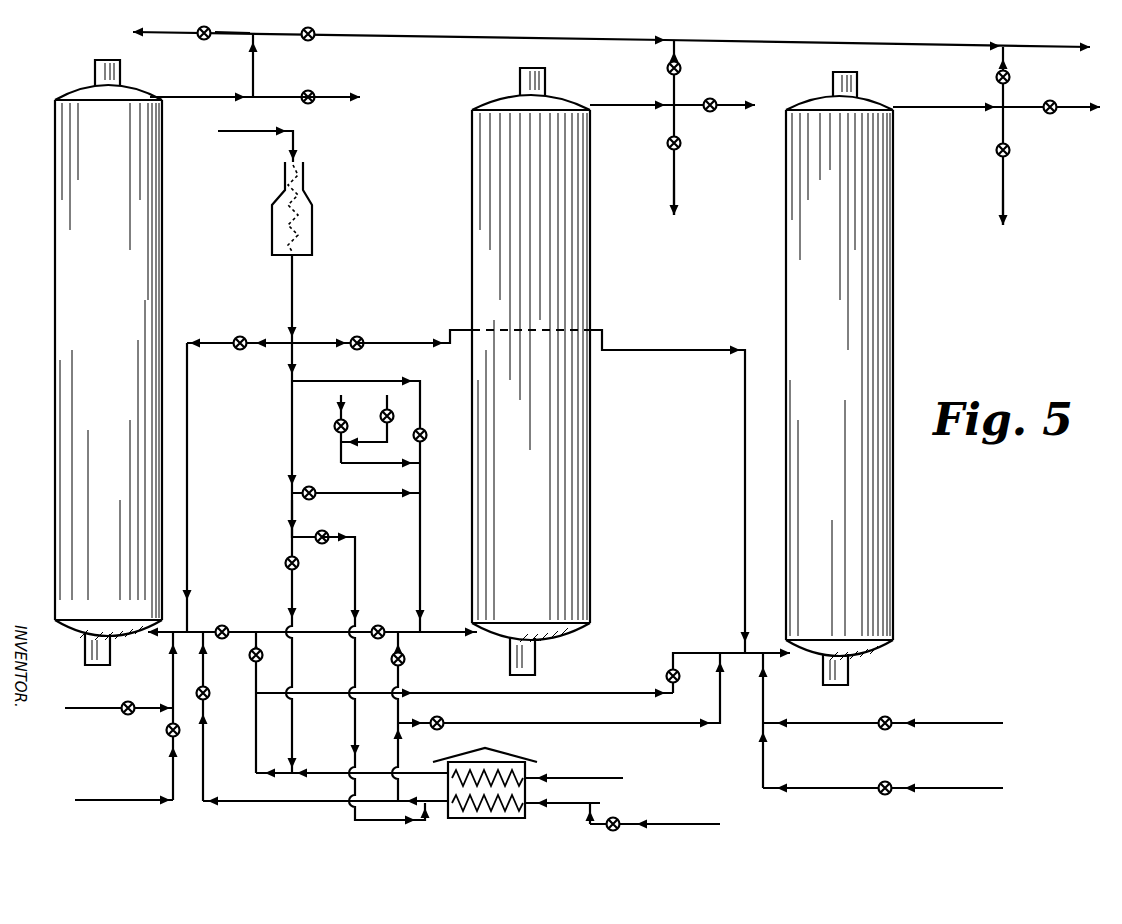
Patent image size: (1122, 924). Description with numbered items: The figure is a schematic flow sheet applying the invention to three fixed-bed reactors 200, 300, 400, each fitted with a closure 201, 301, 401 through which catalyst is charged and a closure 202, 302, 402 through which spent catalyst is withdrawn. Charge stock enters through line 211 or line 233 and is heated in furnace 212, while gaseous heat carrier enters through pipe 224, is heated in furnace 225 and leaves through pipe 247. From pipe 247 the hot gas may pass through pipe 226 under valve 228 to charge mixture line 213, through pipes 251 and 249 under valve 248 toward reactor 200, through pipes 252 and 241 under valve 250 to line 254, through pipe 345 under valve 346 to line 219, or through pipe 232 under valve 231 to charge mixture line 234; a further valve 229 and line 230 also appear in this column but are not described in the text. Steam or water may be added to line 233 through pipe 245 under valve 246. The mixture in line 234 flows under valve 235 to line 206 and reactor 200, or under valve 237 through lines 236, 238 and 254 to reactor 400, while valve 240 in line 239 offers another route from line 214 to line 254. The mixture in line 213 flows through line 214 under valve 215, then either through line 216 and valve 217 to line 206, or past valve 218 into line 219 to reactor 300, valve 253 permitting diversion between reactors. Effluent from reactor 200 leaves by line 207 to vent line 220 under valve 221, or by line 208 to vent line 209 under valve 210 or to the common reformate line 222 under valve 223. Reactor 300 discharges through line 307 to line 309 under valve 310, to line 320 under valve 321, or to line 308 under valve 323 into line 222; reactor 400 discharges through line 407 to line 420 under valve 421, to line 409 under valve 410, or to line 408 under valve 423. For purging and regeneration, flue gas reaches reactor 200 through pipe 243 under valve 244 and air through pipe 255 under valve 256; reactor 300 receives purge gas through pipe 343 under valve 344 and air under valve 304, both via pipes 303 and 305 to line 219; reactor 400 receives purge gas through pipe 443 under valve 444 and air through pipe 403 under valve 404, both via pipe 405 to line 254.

The reactor 200 is at (108, 362).
The closure 201 is at (95, 72).
The closure 202 is at (85, 655).
The line 206 is at (160, 640).
The line 207 is at (208, 95).
The line 208 is at (250, 70).
The line 209 is at (222, 34).
The valve 210 is at (203, 42).
The line 211 is at (542, 776).
The furnace 212 is at (478, 750).
The charge mixture line 213 is at (437, 780).
The line 214 is at (252, 729).
The valve 215 is at (250, 662).
The line 216 is at (248, 640).
The valve 217 is at (230, 620).
The valve 218 is at (396, 624).
The line 219 is at (450, 645).
The line 220 is at (329, 110).
The valve 221 is at (302, 104).
The line 222 is at (362, 48).
The valve 223 is at (302, 50).
The pipe 224 is at (222, 140).
The furnace 225 is at (313, 222).
The pipe 226 is at (295, 367).
The valve 228 is at (283, 563).
The valve 229 is at (314, 493).
The line 230 is at (296, 505).
The valve 231 is at (312, 553).
The pipe 232 is at (358, 558).
The line 233 is at (616, 812).
The charge mixture line 234 is at (261, 794).
The valve 235 is at (210, 694).
The line 236 is at (396, 745).
The valve 237 is at (445, 718).
The line 238 is at (598, 718).
The line 239 is at (438, 690).
The valve 240 is at (665, 677).
The pipe 241 is at (448, 332).
The pipe 243 is at (118, 799).
The valve 244 is at (165, 736).
The pipe 245 is at (686, 832).
The valve 246 is at (585, 825).
The pipe 247 is at (295, 291).
The valve 248 is at (229, 362).
The pipe 249 is at (190, 487).
The valve 250 is at (360, 338).
The pipe 251 is at (280, 334).
The pipe 252 is at (337, 336).
The valve 253 is at (406, 660).
The line 254 is at (773, 660).
The pipe 255 is at (117, 710).
The valve 256 is at (127, 703).
The reactor 300 is at (531, 368).
The closure 301 is at (518, 85).
The closure 302 is at (537, 661).
The pipe 303 is at (396, 462).
The valve 304 is at (335, 426).
The pipe 305 is at (413, 482).
The line 307 is at (613, 97).
The line 308 is at (672, 95).
The line 309 is at (672, 196).
The valve 310 is at (682, 146).
The line 320 is at (754, 97).
The valve 321 is at (702, 118).
The valve 323 is at (682, 66).
The pipe 343 is at (384, 397).
The valve 344 is at (380, 410).
The pipe 345 is at (362, 378).
The valve 346 is at (426, 436).
The reactor 400 is at (839, 378).
The closure 401 is at (830, 88).
The closure 402 is at (848, 672).
The pipe 403 is at (944, 730).
The valve 404 is at (827, 736).
The pipe 405 is at (766, 700).
The line 407 is at (926, 98).
The line 408 is at (1000, 96).
The line 409 is at (1000, 213).
The valve 410 is at (1010, 152).
The line 420 is at (1096, 98).
The valve 421 is at (1042, 122).
The valve 423 is at (1010, 75).
The pipe 443 is at (945, 792).
The valve 444 is at (827, 800).